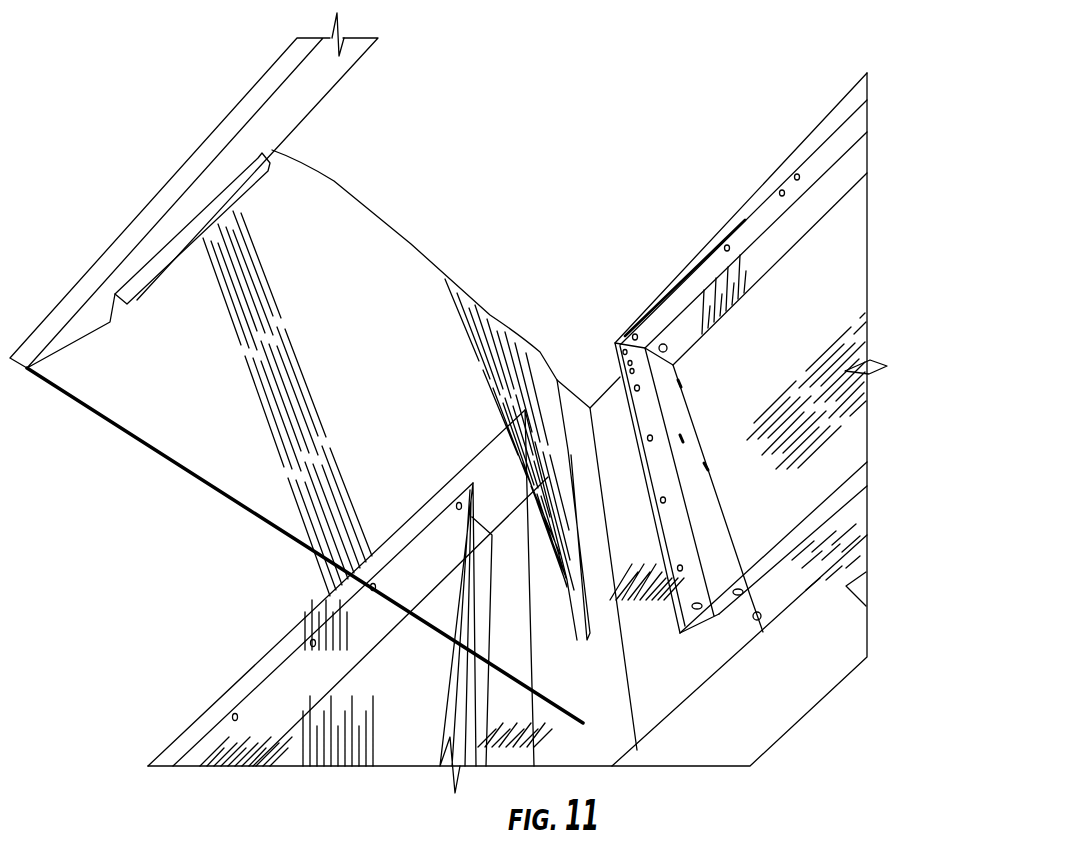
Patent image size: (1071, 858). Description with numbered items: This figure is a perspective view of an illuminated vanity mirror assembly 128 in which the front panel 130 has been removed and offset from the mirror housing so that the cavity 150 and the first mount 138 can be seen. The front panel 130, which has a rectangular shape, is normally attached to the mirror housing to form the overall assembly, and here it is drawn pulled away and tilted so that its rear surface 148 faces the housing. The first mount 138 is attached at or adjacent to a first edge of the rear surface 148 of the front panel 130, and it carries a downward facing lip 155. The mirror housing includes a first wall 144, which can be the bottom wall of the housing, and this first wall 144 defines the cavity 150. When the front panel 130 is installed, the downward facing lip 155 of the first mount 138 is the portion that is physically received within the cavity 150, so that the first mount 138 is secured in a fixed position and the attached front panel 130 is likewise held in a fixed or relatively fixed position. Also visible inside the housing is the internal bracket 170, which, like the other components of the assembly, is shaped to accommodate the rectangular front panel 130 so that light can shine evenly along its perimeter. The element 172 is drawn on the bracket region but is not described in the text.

The illuminated vanity mirror assembly 128 is at (112, 154).
The front panel 130 is at (213, 131).
The rear surface 148 is at (306, 77).
The first mount 138 is at (283, 148).
The downward facing lip 155 is at (170, 246).
The cavity 150 is at (602, 613).
The first wall 144 is at (603, 697).
The mounting bracket 172 is at (600, 405).
The internal bracket 170 is at (750, 228).